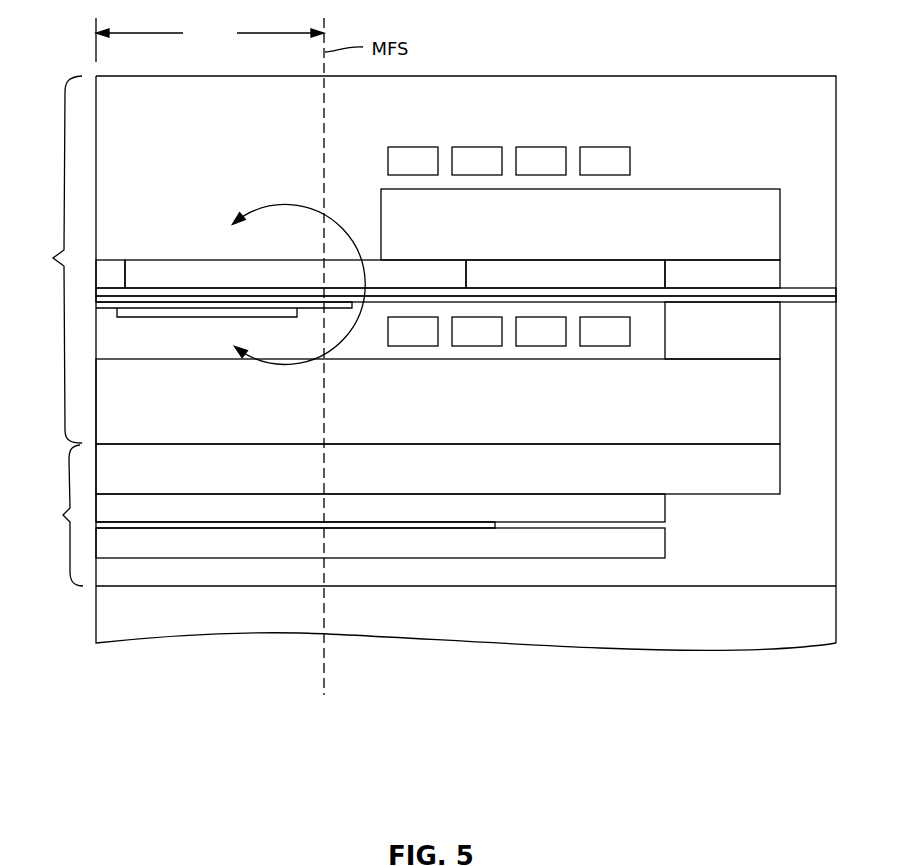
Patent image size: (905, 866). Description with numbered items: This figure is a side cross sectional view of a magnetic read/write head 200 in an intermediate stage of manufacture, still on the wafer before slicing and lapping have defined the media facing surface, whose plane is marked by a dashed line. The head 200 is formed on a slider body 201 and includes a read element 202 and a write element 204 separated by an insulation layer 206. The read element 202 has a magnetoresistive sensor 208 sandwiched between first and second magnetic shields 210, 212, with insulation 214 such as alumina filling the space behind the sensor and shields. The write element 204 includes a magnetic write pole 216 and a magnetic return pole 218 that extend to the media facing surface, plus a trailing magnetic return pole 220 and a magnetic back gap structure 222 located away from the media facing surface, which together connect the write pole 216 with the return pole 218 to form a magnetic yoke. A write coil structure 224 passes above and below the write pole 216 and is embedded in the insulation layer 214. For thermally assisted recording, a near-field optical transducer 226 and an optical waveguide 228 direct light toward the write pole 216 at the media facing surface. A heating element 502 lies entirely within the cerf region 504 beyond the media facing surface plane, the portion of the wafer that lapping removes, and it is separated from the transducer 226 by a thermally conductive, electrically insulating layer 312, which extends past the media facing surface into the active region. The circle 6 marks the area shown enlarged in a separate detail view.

The circle 6- 6 is at (291, 284).
The magnetic read/write head 200 is at (498, 70).
The slider body 201 is at (523, 615).
The read element 202 is at (66, 459).
The write element 204 is at (82, 76).
The insulation layer 206 is at (454, 466).
The magnetoresistive sensor 208 is at (478, 528).
The first magnetic shield 210 is at (444, 545).
The second magnetic shield 212 is at (444, 509).
The insulation layer 214 is at (550, 106).
The magnetic write pole 216 is at (265, 275).
The magnetic return pole 218 is at (415, 402).
The trailing magnetic return pole 220 is at (590, 222).
The magnetic back gap structure 222 is at (744, 275).
The write coil structure 224 is at (509, 246).
The near-field optical transducer 226 is at (113, 295).
The optical waveguide 228 is at (478, 295).
The thermally conductive, electrically insulating layer 312 is at (320, 307).
The heating element 502 is at (192, 313).
The cerf region 504 is at (210, 40).